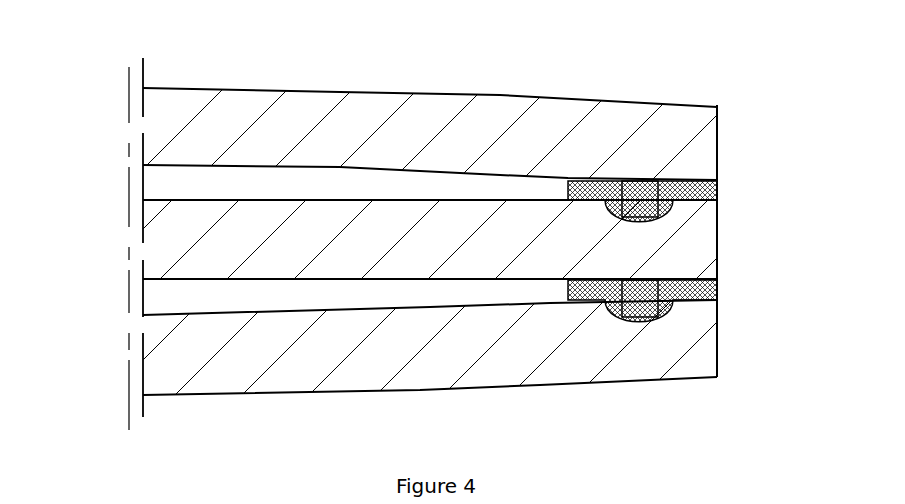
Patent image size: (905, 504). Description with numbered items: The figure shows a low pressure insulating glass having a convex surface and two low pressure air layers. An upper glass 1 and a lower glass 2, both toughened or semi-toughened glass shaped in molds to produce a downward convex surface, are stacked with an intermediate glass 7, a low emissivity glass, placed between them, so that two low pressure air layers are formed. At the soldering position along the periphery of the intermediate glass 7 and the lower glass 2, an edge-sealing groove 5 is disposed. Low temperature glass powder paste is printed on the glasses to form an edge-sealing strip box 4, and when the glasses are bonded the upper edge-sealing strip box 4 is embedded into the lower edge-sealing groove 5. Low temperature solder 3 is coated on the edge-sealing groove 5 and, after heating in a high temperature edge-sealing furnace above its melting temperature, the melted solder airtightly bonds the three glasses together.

The upper glass 1 is at (390, 117).
The lower glass 2 is at (477, 350).
The low temperature solder 3 is at (615, 178).
The edge-sealing strip box 4 is at (657, 180).
The edge-sealing groove 5 is at (608, 305).
The intermediate glass 7 is at (428, 215).